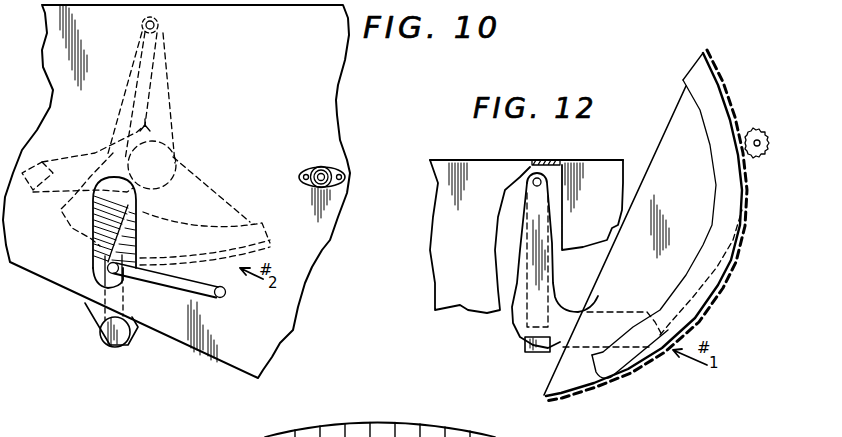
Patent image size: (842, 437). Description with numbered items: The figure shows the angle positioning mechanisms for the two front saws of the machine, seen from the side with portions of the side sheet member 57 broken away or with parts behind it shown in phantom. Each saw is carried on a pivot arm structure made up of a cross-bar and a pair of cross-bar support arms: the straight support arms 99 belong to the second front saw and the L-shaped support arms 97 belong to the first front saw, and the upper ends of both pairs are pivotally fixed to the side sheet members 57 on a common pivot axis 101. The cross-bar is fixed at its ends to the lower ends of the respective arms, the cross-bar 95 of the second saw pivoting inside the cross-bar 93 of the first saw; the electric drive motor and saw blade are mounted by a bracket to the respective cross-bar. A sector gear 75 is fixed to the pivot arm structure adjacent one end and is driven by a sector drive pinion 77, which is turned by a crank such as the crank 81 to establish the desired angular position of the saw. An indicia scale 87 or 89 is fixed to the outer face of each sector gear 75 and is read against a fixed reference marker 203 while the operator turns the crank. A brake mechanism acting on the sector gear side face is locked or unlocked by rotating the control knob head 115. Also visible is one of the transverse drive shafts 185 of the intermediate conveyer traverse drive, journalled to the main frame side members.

In FIG. 10, the side sheet member 57 is at (70, 280).
In FIG. 12, the side sheet member 57 is at (453, 300).
In FIG. 10, the sector gear 75 is at (73, 232).
In FIG. 12, the sector gear 75 is at (733, 271).
In FIG. 12, the sector drive pinion 77 is at (757, 130).
In FIG. 10, the crank 81 is at (183, 292).
In FIG. 12, the indicia scale 87 is at (697, 78).
In FIG. 10, the indicia scale 89 is at (260, 230).
In FIG. 12, the cross-bar 93 is at (647, 318).
In FIG. 12, the cross-bar 95 is at (522, 343).
In FIG. 10, the cross-bar support arms 97 is at (167, 83).
In FIG. 12, the cross-bar support arms 97 is at (561, 300).
In FIG. 10, the cross-bar support arms 99 is at (157, 66).
In FIG. 12, the cross-bar support arms 99 is at (526, 253).
In FIG. 10, the common pivot axis 101 is at (158, 25).
In FIG. 12, the common pivot axis 101 is at (535, 178).
In FIG. 10, the control knob head 115 is at (115, 347).
In FIG. 10, the drive shaft 185 is at (320, 167).
In FIG. 10, the fixed reference marker 203 is at (112, 246).